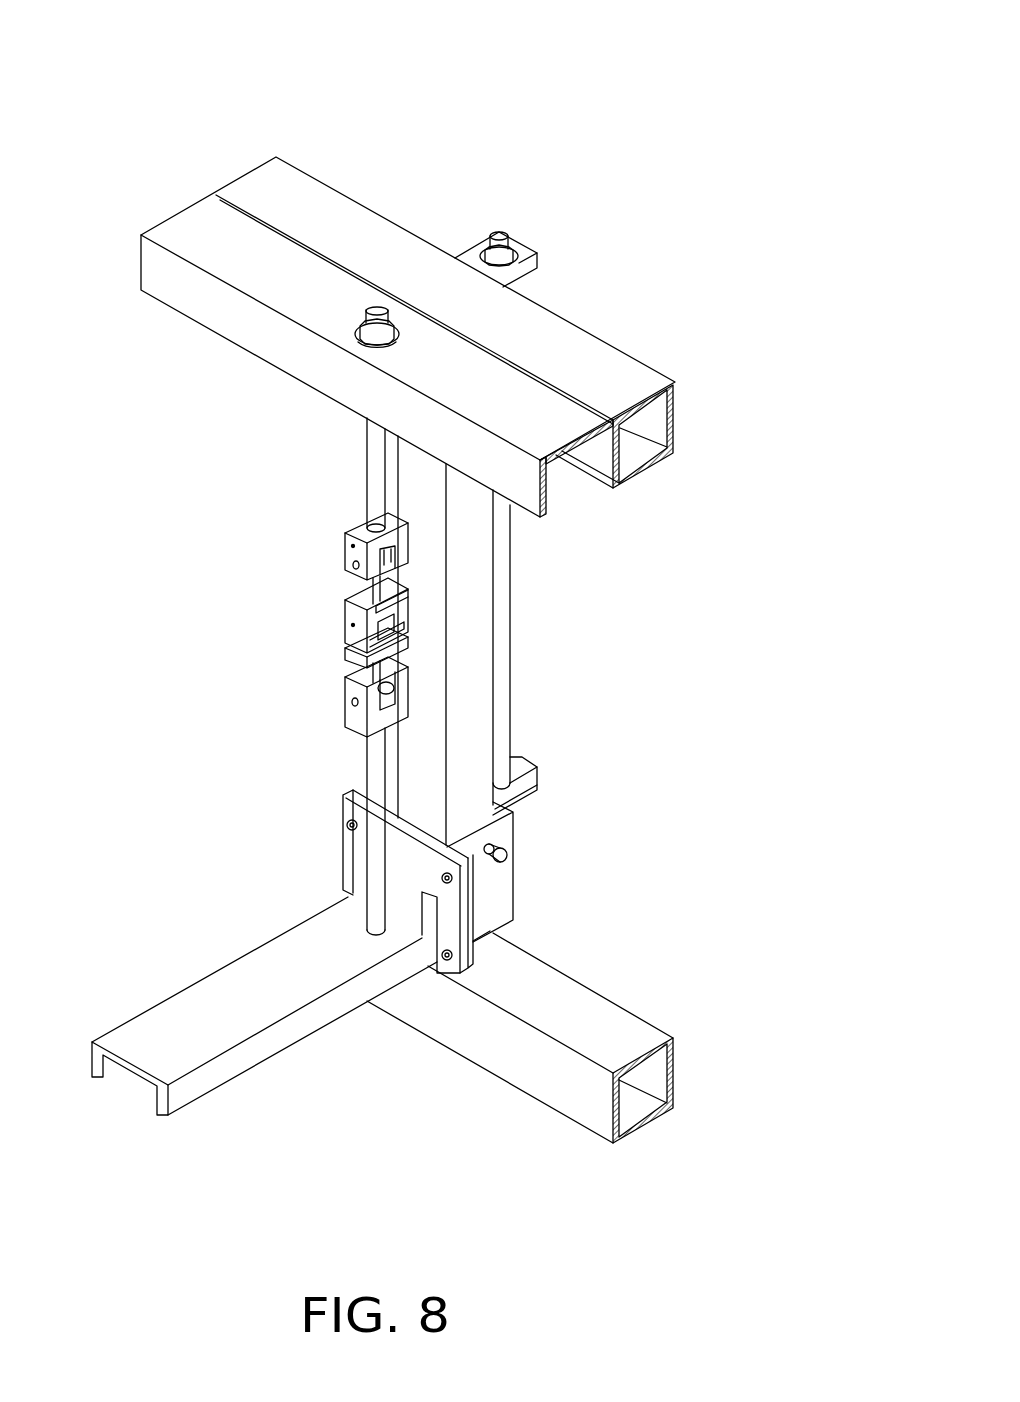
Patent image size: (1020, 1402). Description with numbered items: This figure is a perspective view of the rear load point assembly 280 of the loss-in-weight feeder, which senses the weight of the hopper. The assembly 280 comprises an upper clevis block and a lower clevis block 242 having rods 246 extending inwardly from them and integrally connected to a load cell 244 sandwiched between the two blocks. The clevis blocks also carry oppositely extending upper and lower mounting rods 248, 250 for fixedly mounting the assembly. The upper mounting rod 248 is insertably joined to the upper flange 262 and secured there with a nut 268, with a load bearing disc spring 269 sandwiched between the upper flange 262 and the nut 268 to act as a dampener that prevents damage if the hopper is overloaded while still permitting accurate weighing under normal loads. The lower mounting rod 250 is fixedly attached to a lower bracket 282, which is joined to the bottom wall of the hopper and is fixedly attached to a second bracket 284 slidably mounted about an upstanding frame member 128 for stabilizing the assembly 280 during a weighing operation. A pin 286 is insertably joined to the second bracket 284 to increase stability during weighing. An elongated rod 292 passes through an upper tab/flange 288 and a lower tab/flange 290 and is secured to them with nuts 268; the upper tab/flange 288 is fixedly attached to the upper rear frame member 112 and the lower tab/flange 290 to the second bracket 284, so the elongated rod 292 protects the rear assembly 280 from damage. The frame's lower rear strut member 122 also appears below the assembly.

The rear load point assembly 280 is at (412, 133).
The upper flange 262 is at (181, 233).
The upper rear strut member 112 is at (630, 385).
The upper tab/flange 288 is at (471, 258).
The nut 268 is at (516, 251).
The load bearing spring 269 is at (370, 340).
The upper mounting rod 248 is at (378, 437).
The lower clevis block 242 is at (348, 543).
The rod 246 is at (368, 587).
The load cell 244 is at (348, 628).
The lower mounting rod 250 is at (373, 768).
The upstanding frame member 128 is at (475, 673).
The elongated rod 292 is at (503, 610).
The lower tab/flange 290 is at (527, 778).
The second bracket 284 is at (497, 903).
The pin 286 is at (510, 850).
The lower bracket 282 is at (132, 1035).
The lower rear strut member 122 is at (637, 1037).